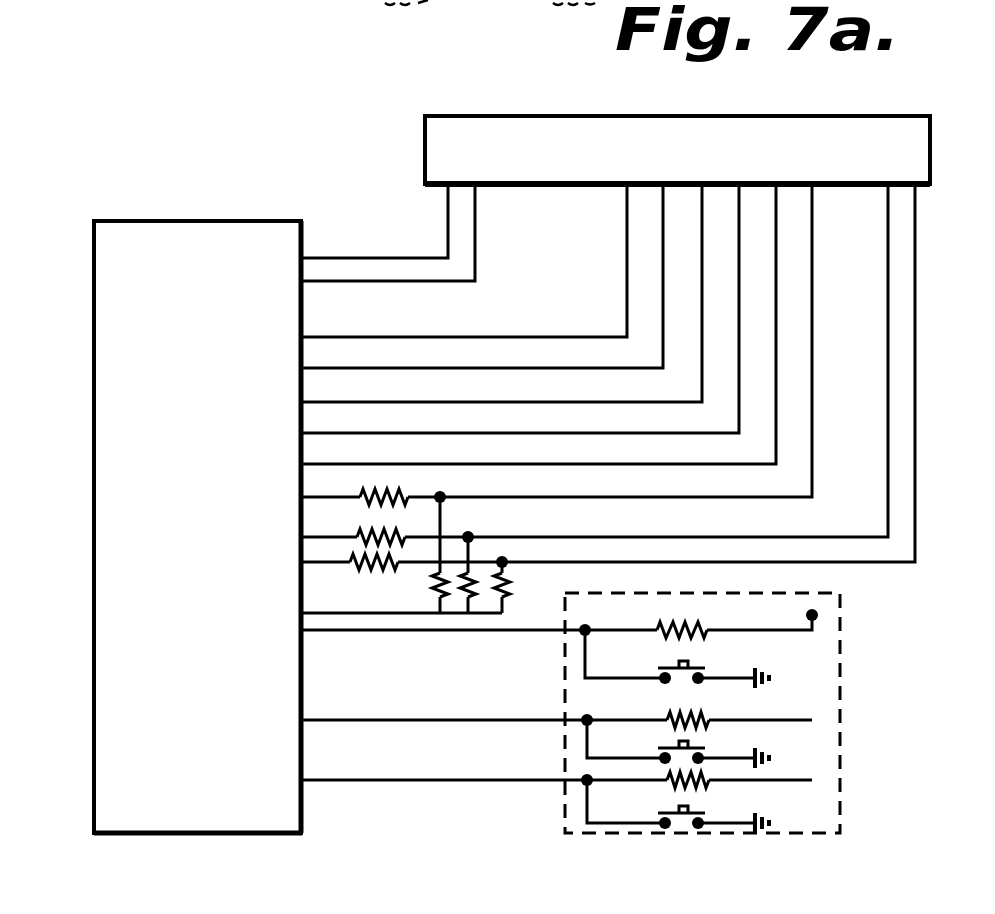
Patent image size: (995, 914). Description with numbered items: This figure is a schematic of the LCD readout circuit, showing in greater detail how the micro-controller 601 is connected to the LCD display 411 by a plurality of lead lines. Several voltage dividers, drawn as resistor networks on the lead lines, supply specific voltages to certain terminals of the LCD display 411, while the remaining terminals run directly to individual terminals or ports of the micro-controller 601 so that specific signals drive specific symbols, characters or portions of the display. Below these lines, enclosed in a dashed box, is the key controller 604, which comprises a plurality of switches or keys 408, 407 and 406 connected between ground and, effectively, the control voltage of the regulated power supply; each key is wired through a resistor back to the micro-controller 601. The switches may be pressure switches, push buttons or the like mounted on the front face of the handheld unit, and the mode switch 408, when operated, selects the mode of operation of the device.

The LCD display 411 is at (565, 97).
The micro-controller 601 is at (242, 290).
The key controller 604 is at (848, 611).
The mode switch 408 is at (698, 667).
The switch 407 is at (692, 744).
The switch 406 is at (673, 809).